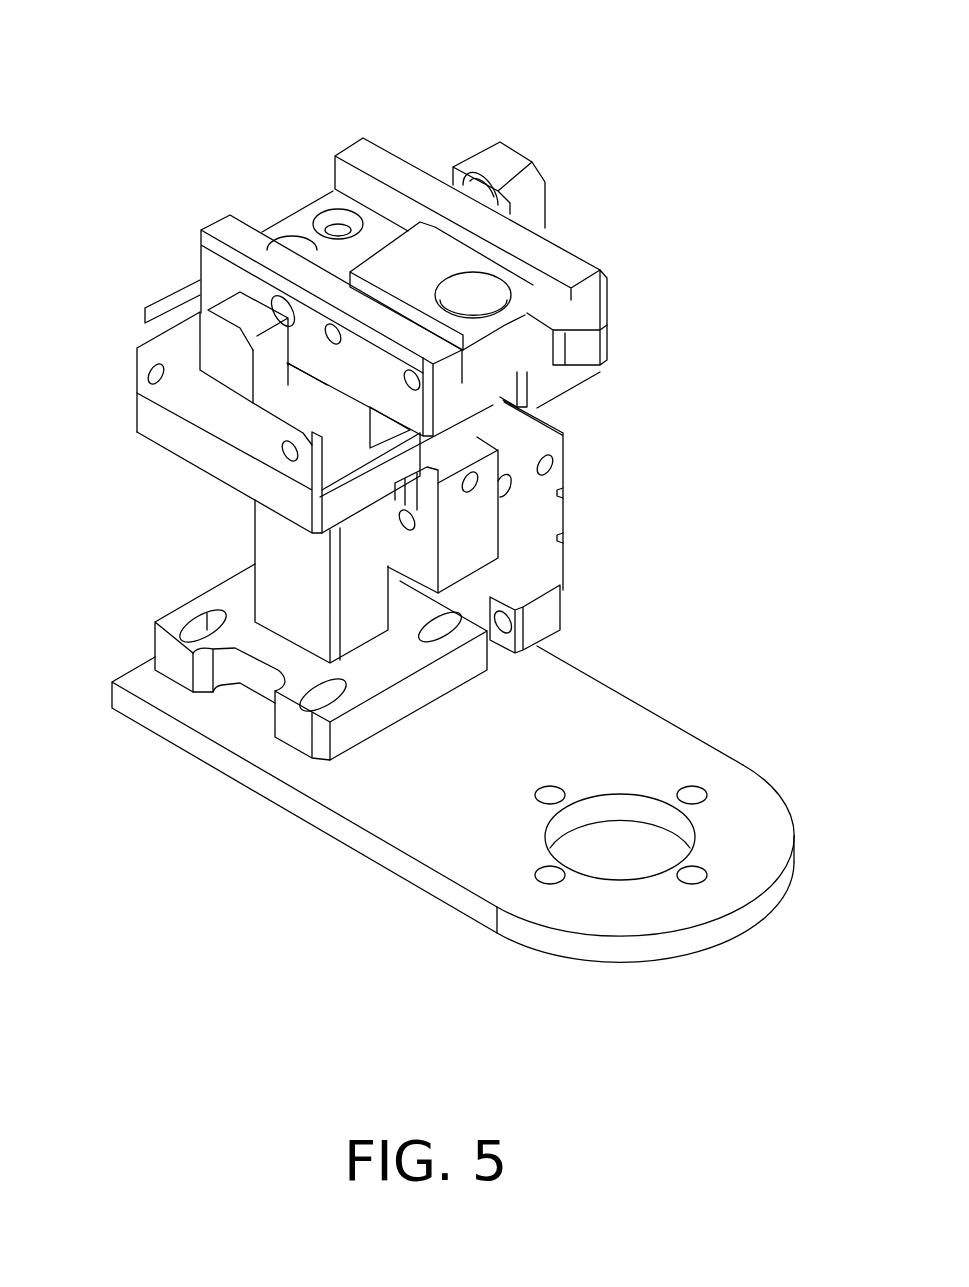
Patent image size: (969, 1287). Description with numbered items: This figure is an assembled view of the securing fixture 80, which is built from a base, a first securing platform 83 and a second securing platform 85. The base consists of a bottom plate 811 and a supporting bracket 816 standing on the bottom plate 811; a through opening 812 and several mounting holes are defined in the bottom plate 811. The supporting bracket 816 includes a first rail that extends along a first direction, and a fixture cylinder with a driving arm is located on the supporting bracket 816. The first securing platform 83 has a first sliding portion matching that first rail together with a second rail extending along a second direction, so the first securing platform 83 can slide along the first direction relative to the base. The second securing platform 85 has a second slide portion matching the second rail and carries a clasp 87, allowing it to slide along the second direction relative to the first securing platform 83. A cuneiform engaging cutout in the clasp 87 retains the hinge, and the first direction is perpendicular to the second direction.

The securing fixture 80 is at (525, 66).
The bottom plate 811 is at (577, 705).
The through opening 812 is at (622, 850).
The supporting bracket 816 is at (275, 555).
The first securing platform 83 is at (173, 432).
The second securing platform 85 is at (217, 268).
The clasp 87 is at (528, 297).